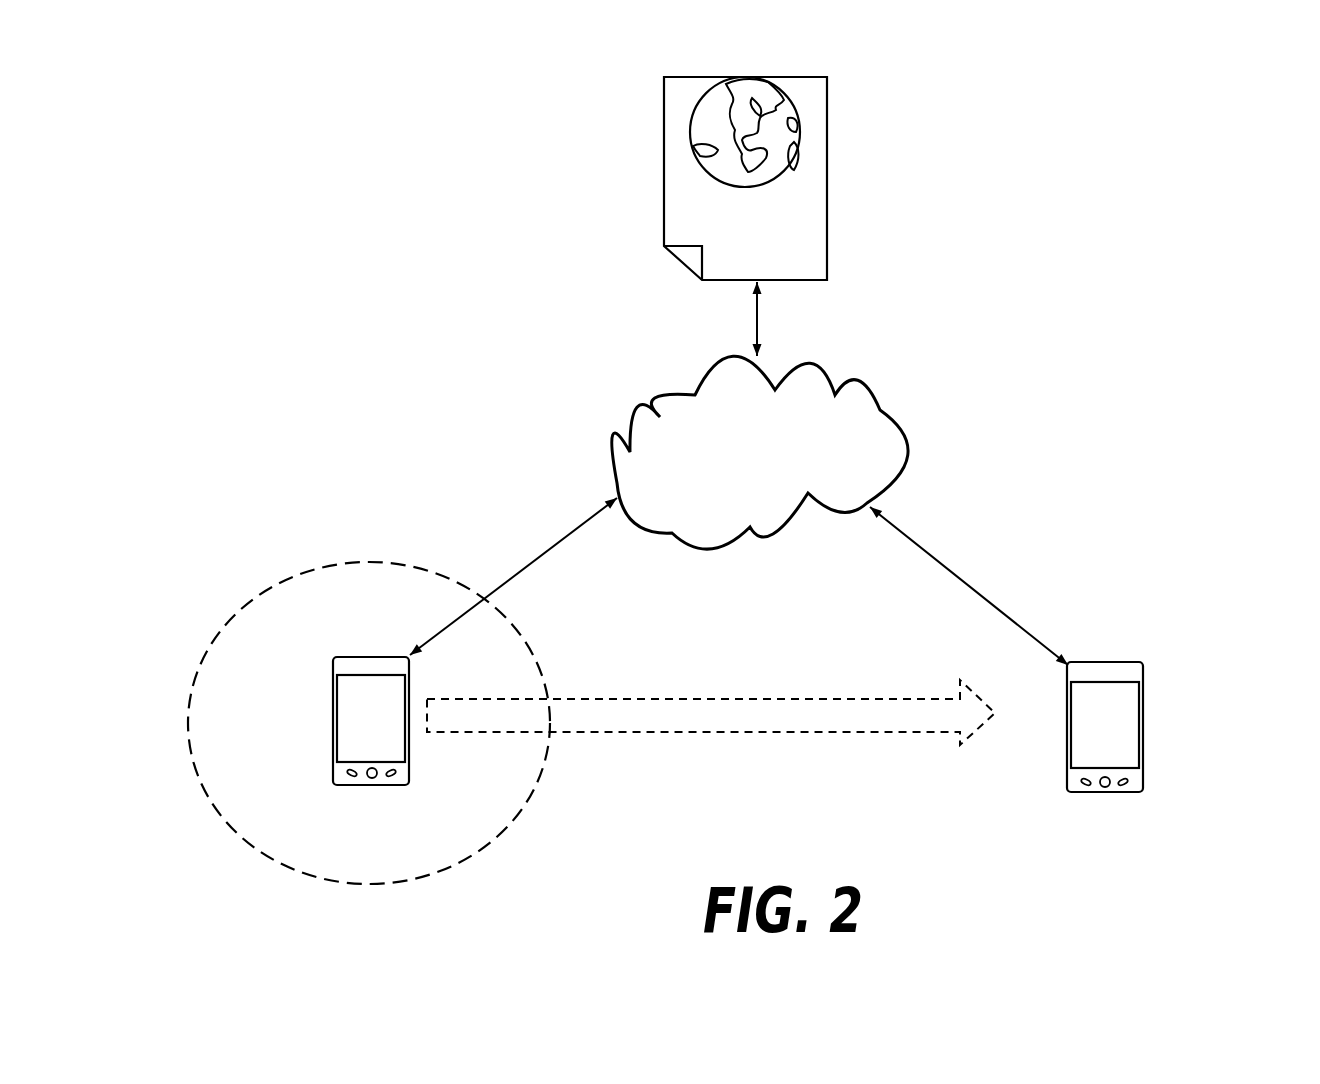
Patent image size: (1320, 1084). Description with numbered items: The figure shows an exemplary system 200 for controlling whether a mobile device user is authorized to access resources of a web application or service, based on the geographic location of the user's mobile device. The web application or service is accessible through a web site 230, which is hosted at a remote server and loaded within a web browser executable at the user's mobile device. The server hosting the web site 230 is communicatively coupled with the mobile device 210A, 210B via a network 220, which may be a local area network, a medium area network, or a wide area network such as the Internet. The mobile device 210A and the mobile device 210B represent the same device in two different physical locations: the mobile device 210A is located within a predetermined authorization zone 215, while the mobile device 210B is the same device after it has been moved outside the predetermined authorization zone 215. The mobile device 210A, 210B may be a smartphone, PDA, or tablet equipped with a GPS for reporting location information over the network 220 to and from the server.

The system 200 is at (1165, 204).
The mobile device 210A is at (333, 728).
The mobile device 210B is at (1143, 730).
The predetermined authorization zone 215 is at (336, 563).
The network 220 is at (876, 406).
The web site 230 is at (828, 187).